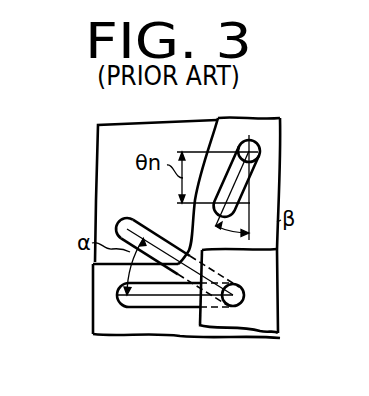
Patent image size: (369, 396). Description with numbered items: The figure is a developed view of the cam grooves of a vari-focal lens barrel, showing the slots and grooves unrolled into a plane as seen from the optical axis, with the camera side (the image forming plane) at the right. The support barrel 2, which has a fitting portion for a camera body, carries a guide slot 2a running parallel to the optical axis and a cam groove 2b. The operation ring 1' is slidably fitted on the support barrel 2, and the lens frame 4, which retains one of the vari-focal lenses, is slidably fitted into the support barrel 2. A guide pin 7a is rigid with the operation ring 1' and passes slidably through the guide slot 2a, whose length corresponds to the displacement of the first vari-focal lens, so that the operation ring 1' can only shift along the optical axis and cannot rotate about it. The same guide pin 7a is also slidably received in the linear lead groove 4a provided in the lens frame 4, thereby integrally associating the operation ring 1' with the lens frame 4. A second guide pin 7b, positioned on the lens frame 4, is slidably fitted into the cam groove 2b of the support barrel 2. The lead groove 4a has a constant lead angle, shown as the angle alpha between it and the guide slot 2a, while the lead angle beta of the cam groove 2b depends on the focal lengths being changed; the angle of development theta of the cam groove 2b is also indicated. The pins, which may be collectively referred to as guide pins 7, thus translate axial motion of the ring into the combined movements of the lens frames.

The lens frame 4 is at (108, 137).
The linear lead groove 4a is at (157, 235).
The operation ring 1' is at (247, 225).
The support barrel 2 is at (103, 312).
The guide slot 2a is at (117, 297).
The cam groove 2b is at (249, 186).
The guide pin 7a is at (245, 297).
The guide pin 7b is at (261, 150).
The pin 7 is at (362, 311).